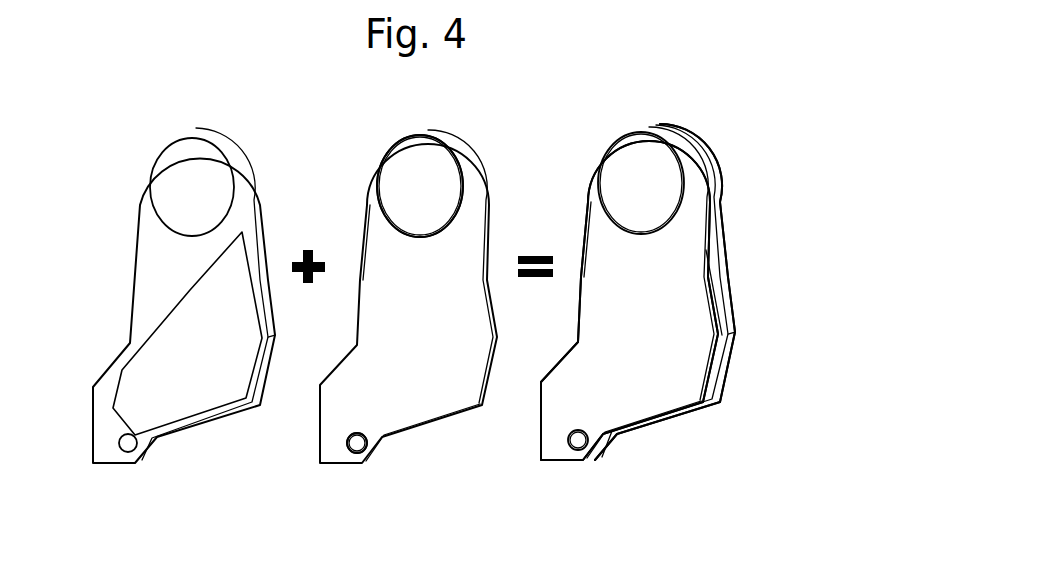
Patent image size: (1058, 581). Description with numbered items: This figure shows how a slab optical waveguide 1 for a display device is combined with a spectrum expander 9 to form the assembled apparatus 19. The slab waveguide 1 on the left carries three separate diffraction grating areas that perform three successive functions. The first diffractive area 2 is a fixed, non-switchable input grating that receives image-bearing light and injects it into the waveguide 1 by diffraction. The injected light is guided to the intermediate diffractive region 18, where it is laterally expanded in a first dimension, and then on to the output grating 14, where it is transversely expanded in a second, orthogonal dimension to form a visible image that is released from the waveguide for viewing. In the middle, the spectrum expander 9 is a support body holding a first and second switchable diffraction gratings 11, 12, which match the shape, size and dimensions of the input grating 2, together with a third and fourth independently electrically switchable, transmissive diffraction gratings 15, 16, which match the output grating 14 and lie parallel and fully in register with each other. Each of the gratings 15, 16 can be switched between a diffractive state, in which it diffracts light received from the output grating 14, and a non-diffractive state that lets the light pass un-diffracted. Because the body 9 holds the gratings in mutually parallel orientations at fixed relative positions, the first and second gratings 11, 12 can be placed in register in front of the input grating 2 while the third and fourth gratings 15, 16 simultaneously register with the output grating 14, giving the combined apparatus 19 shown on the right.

The slab optical waveguide 1 is at (238, 150).
The first diffractive area 2 is at (118, 443).
The spectrum expander 9 is at (467, 177).
The first switchable diffraction grating 11 is at (357, 443).
The second switchable diffraction grating 12 is at (357, 443).
The output grating 14 is at (173, 172).
The third switchable diffraction grating 15 is at (405, 155).
The fourth switchable diffraction grating 16 is at (420, 186).
The intermediate diffractive region 18 is at (233, 353).
The assembled composite component 19 is at (724, 126).